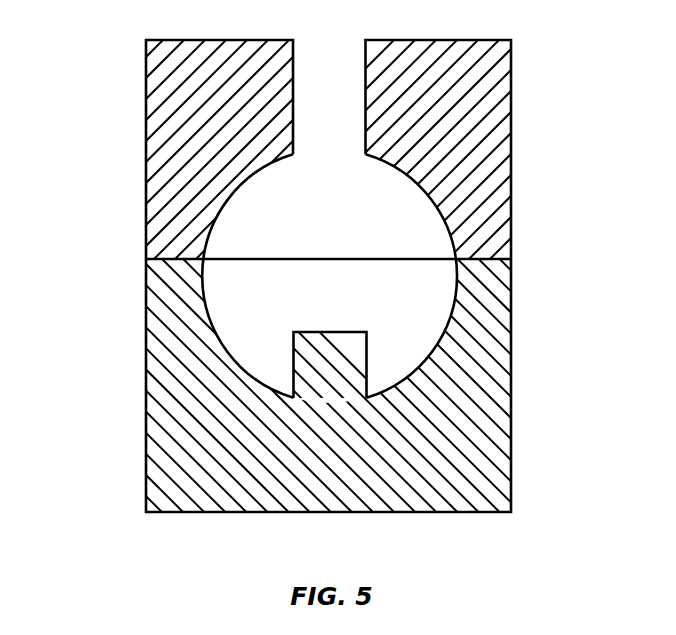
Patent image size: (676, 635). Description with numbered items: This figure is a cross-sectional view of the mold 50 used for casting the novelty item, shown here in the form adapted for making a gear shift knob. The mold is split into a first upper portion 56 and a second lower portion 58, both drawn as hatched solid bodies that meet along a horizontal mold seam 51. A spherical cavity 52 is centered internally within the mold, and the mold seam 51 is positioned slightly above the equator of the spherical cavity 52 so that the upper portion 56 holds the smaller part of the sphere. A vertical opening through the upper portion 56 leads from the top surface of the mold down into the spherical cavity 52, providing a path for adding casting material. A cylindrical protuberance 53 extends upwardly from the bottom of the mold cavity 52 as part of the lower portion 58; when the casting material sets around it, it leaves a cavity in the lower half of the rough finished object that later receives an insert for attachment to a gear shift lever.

The clamp assembly 50 is at (544, 98).
The first upper portion 56 is at (512, 205).
The mold seam 51 is at (512, 248).
The second lower portion 58 is at (512, 325).
The spherical cavity 52 is at (216, 340).
The cylindrical protuberance 53 is at (368, 352).